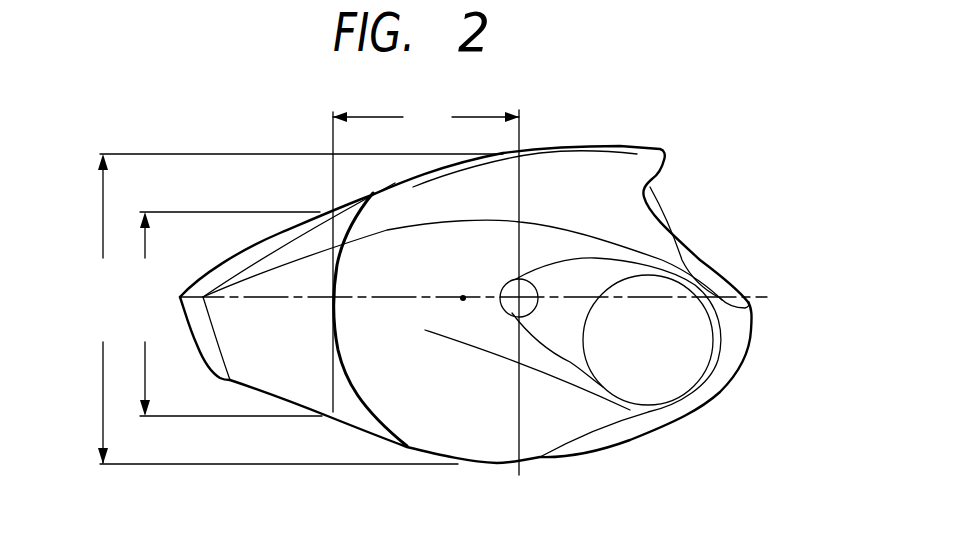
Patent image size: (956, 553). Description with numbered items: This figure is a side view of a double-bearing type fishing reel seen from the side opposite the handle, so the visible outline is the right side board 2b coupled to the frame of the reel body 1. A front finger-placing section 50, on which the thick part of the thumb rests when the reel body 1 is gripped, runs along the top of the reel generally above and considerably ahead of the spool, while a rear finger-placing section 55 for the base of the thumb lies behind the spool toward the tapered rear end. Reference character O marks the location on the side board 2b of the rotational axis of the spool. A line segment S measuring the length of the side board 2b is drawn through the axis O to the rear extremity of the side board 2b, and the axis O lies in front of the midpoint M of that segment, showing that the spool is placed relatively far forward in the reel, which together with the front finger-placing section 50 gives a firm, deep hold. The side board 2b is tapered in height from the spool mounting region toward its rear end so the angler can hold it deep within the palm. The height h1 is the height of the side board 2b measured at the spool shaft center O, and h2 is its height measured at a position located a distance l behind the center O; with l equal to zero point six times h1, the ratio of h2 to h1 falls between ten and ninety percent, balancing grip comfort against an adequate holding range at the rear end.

The reel body 1 is at (710, 166).
The right side board 2b is at (607, 427).
The front finger-placing section 50 is at (570, 152).
The rear finger-placing section 55 is at (258, 247).
The midpoint of line segment S M is at (461, 295).
The spool axis location O is at (514, 291).
The line segment S is at (761, 296).
The distance behind spool shaft center l is at (426, 288).
The side board height at spool shaft center h1 is at (295, 309).
The side board height behind spool shaft center h2 is at (227, 314).